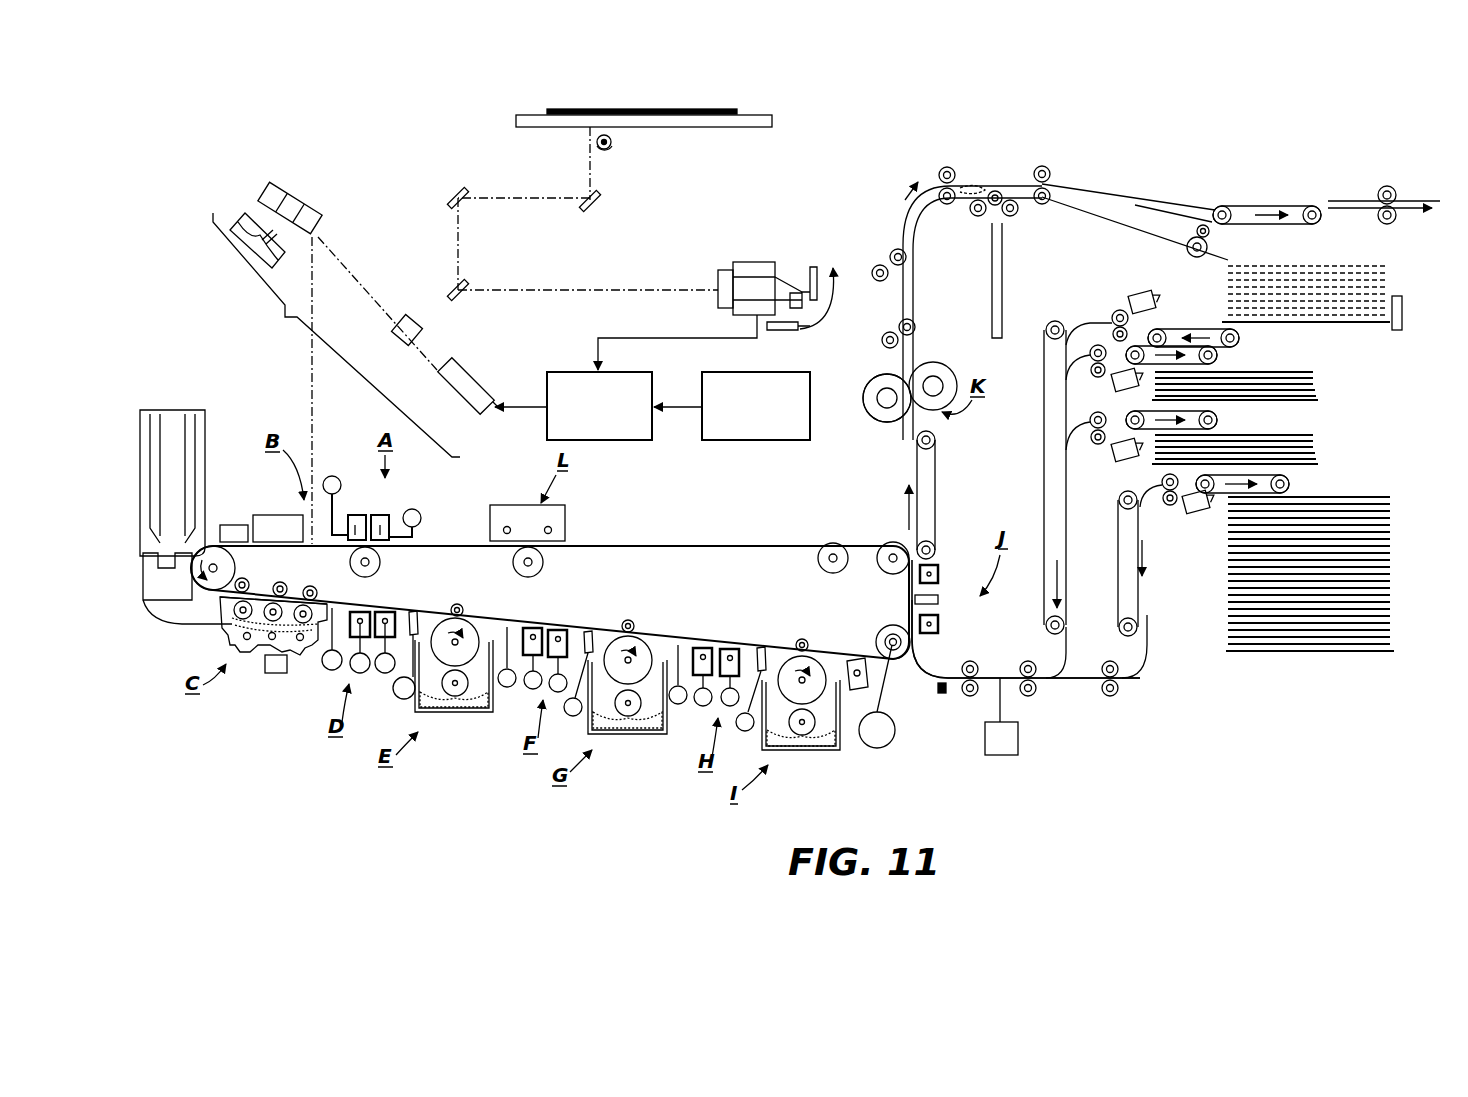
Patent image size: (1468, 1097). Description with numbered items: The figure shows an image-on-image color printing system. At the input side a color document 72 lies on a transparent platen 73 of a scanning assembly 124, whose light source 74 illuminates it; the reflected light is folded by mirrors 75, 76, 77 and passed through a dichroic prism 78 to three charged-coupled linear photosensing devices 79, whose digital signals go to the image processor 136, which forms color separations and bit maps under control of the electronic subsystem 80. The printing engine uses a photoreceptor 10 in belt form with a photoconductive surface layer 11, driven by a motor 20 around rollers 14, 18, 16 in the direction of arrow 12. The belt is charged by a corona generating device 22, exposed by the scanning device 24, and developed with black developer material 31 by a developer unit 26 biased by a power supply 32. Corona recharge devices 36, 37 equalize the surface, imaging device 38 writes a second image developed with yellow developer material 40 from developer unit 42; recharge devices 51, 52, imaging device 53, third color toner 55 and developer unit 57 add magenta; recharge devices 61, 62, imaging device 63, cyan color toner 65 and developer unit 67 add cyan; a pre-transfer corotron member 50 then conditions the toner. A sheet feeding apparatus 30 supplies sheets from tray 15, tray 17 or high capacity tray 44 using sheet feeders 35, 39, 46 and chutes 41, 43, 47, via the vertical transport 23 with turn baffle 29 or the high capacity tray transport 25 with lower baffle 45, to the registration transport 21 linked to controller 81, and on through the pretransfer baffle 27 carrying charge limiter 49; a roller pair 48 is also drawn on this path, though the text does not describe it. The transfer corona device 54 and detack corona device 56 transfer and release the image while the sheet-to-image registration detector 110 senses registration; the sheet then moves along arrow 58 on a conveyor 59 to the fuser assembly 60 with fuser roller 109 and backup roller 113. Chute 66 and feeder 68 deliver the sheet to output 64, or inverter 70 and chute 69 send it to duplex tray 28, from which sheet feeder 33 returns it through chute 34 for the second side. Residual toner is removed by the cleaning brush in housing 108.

The photoreceptor 10 is at (710, 544).
The photoconductive surface layer 11 is at (735, 545).
The arrow 12 is at (440, 556).
The roller 14 is at (880, 638).
The tray 15 is at (1318, 400).
The roller 16 is at (208, 546).
The tray 17 is at (1320, 462).
The roller 18 is at (885, 548).
The motor 20 is at (875, 748).
The registration transport 21 is at (998, 678).
The corona generating device 22 is at (356, 482).
The vertical transport 23 is at (1044, 520).
The scanning device 24 is at (283, 318).
The high capacity tray transport 25 is at (1118, 540).
The developer unit 26 is at (273, 659).
The pretransfer baffle 27 is at (920, 672).
The duplex tray 28 is at (1362, 324).
The turn baffle 29 is at (1058, 662).
The sheet feeding apparatus 30 is at (1140, 696).
The developer material 31 is at (258, 605).
The power supply 32 is at (276, 673).
The sheet feeder 33 is at (1240, 335).
The chute 34 is at (1092, 322).
The sheet feeder 35 is at (1218, 356).
The corona recharge device 36 is at (345, 612).
The corona recharge device 37 is at (398, 612).
The imaging device 38 is at (420, 610).
The sheet feeder 39 is at (1218, 420).
The developer material 40 is at (430, 700).
The chute 41 is at (1075, 352).
The developer unit 42 is at (462, 713).
The chute 43 is at (1078, 415).
The high capacity tray 44 is at (1392, 580).
The lower baffle 45 is at (1130, 678).
The sheet feeder 46 is at (1290, 486).
The chute 47 is at (1155, 495).
The feed roller pair 48 is at (955, 668).
The charge limiter 49 is at (942, 695).
The pre-transfer corotron member 50 is at (852, 662).
The corona recharge device 51 is at (528, 628).
The corona recharge device 52 is at (572, 630).
The imaging device 53 is at (595, 632).
The transfer corona device 54 is at (920, 624).
The third color toner 55 is at (598, 735).
The detack corona device 56 is at (920, 576).
The developer unit 57 is at (630, 735).
The arrow 58 is at (900, 505).
The conveyor 59 is at (937, 512).
The fuser assembly 60 is at (867, 376).
The corona recharge device 61 is at (697, 648).
The corona recharge device 62 is at (742, 650).
The imaging device 63 is at (768, 650).
The output 64 is at (1432, 196).
The cyan color toner 65 is at (773, 752).
The chute 66 is at (924, 178).
The developer unit 67 is at (806, 750).
The feeder 68 is at (1278, 226).
The chute 69 is at (1153, 238).
The inverter 70 is at (1003, 283).
The color document 72 is at (660, 110).
The platen 73 is at (762, 114).
The light source 74 is at (612, 146).
The mirror 75 is at (596, 208).
The mirror 76 is at (452, 192).
The mirror 77 is at (450, 295).
The dichroic prism 78 is at (757, 262).
The charged-coupled linear photosensing devices 79 is at (824, 283).
The electronic subsystem 80 is at (773, 372).
The controller 81 is at (988, 734).
The housing 108 is at (505, 505).
The fuser roller 109 is at (866, 410).
The sheet-to-image registration detector 110 is at (992, 574).
The backup roller 113 is at (945, 368).
The scanning assembly 124 is at (491, 102).
The image processor 136 is at (598, 442).